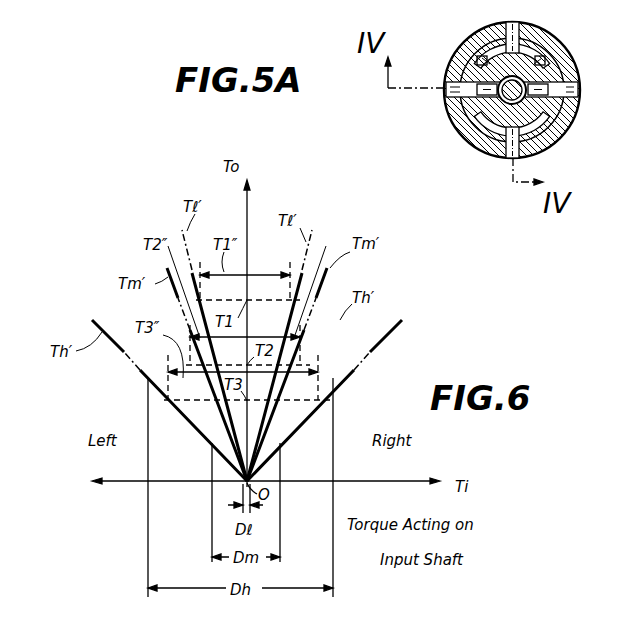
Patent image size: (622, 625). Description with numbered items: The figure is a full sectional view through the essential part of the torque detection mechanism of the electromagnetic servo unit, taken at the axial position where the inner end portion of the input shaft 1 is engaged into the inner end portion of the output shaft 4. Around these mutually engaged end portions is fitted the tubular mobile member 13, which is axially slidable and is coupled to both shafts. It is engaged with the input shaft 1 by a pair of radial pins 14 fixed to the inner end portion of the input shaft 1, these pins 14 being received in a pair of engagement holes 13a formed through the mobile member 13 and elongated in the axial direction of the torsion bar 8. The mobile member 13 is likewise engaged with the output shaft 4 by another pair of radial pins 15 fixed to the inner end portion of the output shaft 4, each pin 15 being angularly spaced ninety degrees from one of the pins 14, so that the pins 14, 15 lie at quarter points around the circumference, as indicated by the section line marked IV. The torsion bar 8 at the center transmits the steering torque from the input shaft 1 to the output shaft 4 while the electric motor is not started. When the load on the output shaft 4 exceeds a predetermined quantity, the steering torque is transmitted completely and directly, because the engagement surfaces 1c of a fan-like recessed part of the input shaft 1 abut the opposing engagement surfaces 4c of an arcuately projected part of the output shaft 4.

The input shaft 1 is at (457, 113).
The engagement surfaces 1c is at (485, 70).
The output shaft 4 is at (535, 45).
The engagement surfaces 4c is at (483, 62).
The torsion bar 8 is at (567, 128).
The mobile member 13 is at (470, 58).
The engagement holes 13a is at (530, 58).
The radial pins 14 is at (477, 86).
The radial pins 15 is at (512, 22).